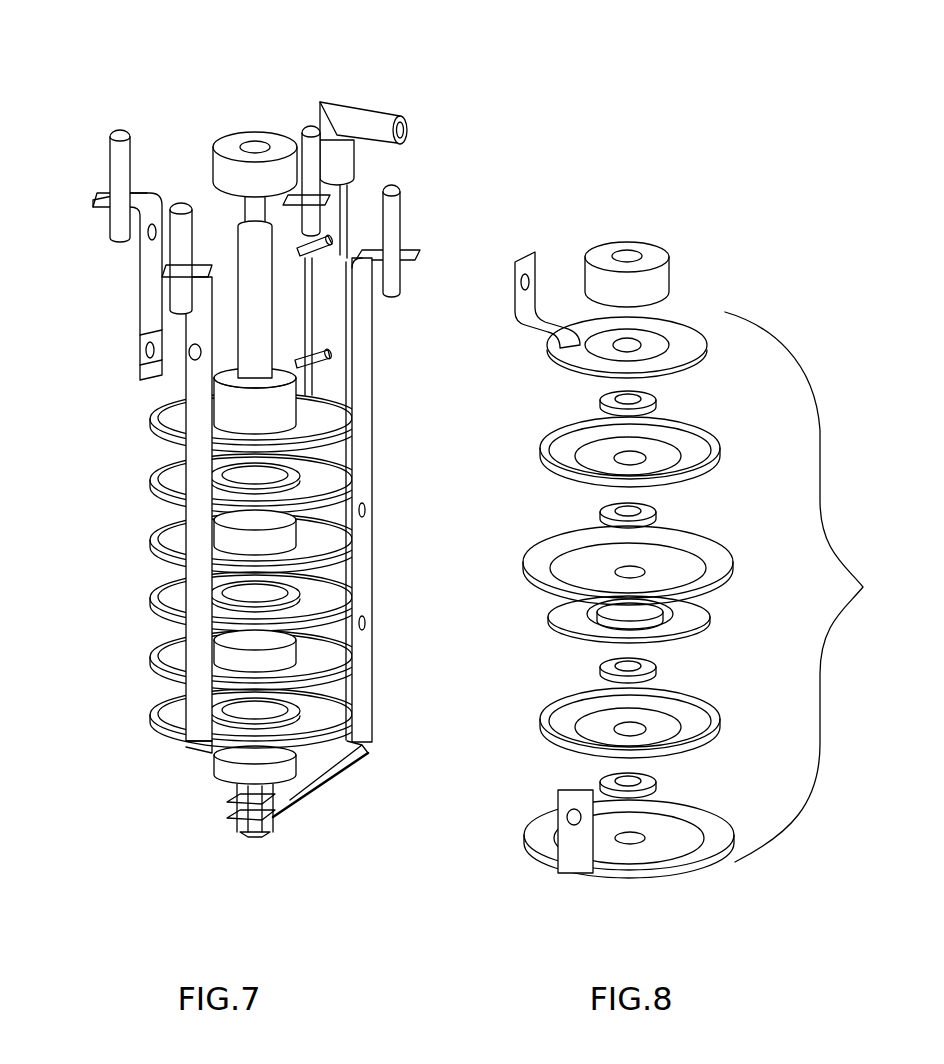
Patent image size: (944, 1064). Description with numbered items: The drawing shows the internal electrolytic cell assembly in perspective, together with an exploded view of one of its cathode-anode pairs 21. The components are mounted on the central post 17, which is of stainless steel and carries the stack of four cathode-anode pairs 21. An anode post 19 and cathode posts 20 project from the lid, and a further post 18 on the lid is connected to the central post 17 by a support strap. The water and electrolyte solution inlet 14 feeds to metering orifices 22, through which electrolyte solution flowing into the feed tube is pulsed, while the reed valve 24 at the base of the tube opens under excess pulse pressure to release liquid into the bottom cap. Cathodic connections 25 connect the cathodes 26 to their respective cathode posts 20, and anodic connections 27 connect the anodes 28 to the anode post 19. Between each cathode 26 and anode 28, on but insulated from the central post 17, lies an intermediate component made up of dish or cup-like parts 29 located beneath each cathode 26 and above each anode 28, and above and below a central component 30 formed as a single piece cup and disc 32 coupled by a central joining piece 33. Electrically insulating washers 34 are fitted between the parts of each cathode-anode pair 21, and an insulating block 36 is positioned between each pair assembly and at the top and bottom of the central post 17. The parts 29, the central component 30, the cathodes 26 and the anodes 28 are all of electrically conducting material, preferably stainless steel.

In FIG. 7, the water and electrolyte solution inlet 14 is at (340, 116).
In FIG. 7, the central post 17 is at (255, 218).
In FIG. 7, the post 18 is at (311, 124).
In FIG. 7, the anode post 19 is at (190, 197).
In FIG. 7, the cathode posts 20 is at (125, 167).
In FIG. 8, the cathode-anode pair 21 is at (818, 587).
In FIG. 7, the metering orifices 22 is at (304, 352).
In FIG. 7, the reed valve 24 is at (292, 803).
In FIG. 7, the cathodic connections 25 is at (150, 283).
In FIG. 8, the cathode 26 is at (580, 333).
In FIG. 7, the anodic connections 27 is at (190, 613).
In FIG. 8, the anode 28 is at (540, 842).
In FIG. 8, the dish or cup-like parts 29 is at (558, 448).
In FIG. 8, the central component 30 is at (500, 559).
In FIG. 8, the disc 32 is at (553, 612).
In FIG. 8, the central joining piece 33 is at (673, 613).
In FIG. 7, the electrically insulating washers 34 is at (255, 558).
In FIG. 8, the electrically insulating washers 34 is at (603, 403).
In FIG. 7, the insulating block 36 is at (282, 140).
In FIG. 8, the insulating block 36 is at (655, 283).